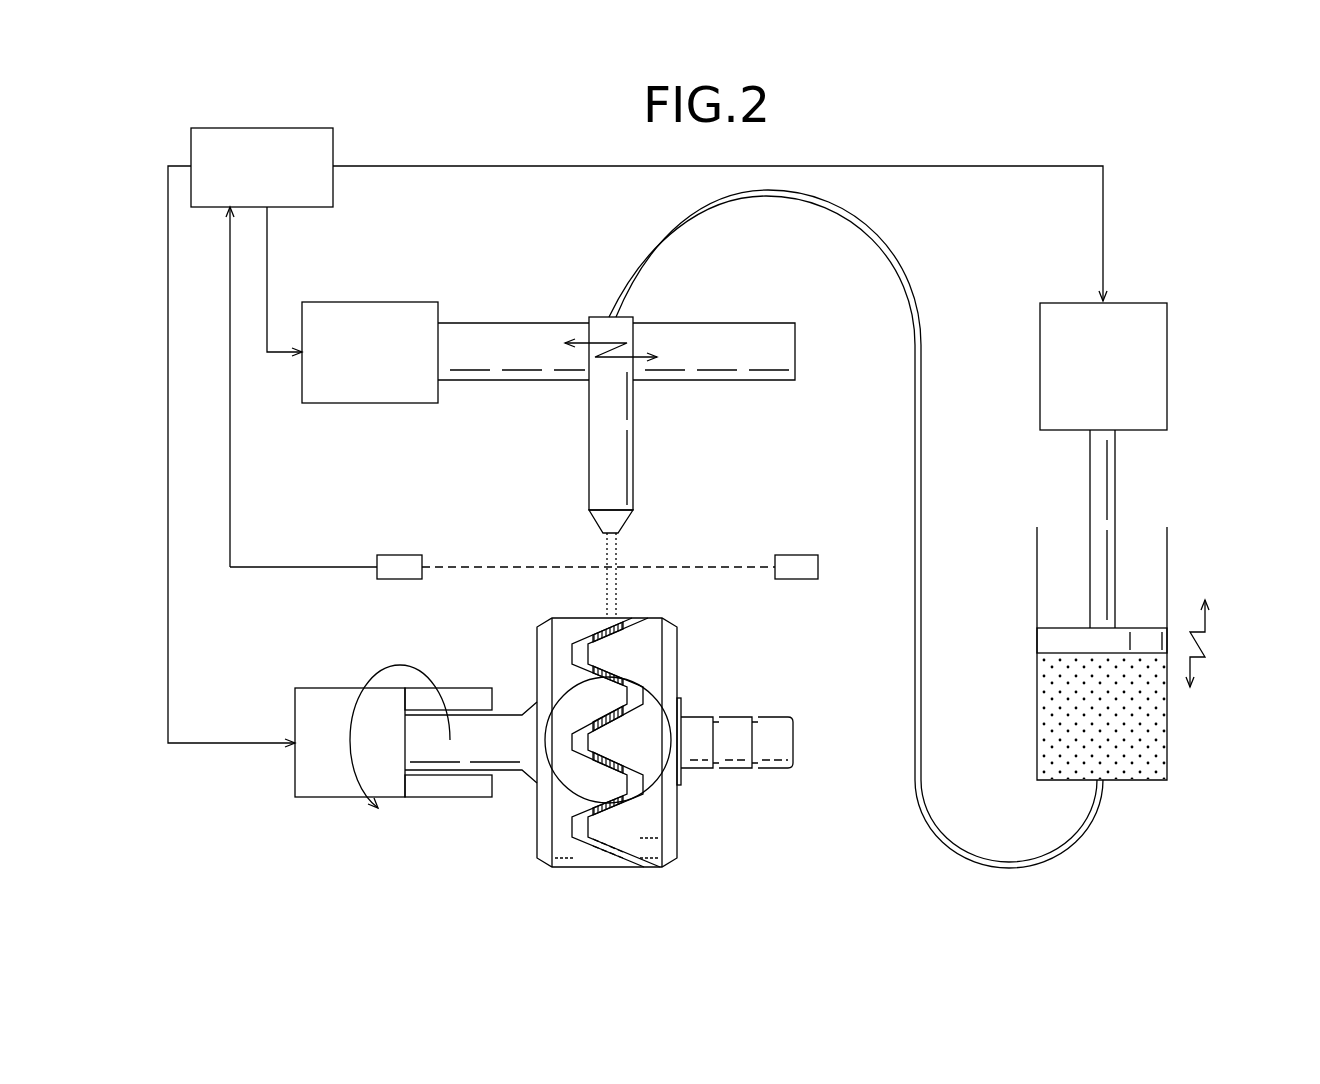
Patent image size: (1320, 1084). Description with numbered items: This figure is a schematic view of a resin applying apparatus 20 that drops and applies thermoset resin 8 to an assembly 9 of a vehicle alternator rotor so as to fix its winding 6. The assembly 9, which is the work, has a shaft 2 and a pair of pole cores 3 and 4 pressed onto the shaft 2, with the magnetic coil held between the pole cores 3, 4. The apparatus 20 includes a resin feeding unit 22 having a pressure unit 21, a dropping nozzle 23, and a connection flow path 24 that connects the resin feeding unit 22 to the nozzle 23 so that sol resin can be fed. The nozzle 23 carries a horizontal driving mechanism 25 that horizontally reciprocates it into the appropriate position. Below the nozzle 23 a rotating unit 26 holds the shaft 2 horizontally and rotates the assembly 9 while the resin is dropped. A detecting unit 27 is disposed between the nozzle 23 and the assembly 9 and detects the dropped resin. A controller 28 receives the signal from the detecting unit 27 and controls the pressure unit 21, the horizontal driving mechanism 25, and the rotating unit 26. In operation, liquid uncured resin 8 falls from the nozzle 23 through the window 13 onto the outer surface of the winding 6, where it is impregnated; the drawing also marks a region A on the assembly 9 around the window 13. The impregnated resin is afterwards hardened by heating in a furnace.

The resin applying apparatus 20 is at (1172, 225).
The pressure unit 21 is at (1167, 372).
The resin feeding unit 22 is at (1172, 568).
The dropping nozzle 23 is at (633, 446).
The connection flow path 24 is at (916, 486).
The horizontal driving mechanism 25 is at (436, 303).
The rotating unit 26 is at (312, 688).
The detecting unit 27 is at (398, 555).
The controller 28 is at (320, 208).
The shaft 2 is at (508, 732).
The pole core 3 is at (544, 868).
The pole core 4 is at (668, 866).
The winding 6 is at (580, 648).
The thermoset resin 8 is at (1048, 710).
The assembly 9 is at (626, 749).
The window 13 is at (582, 645).
The region A is at (565, 795).